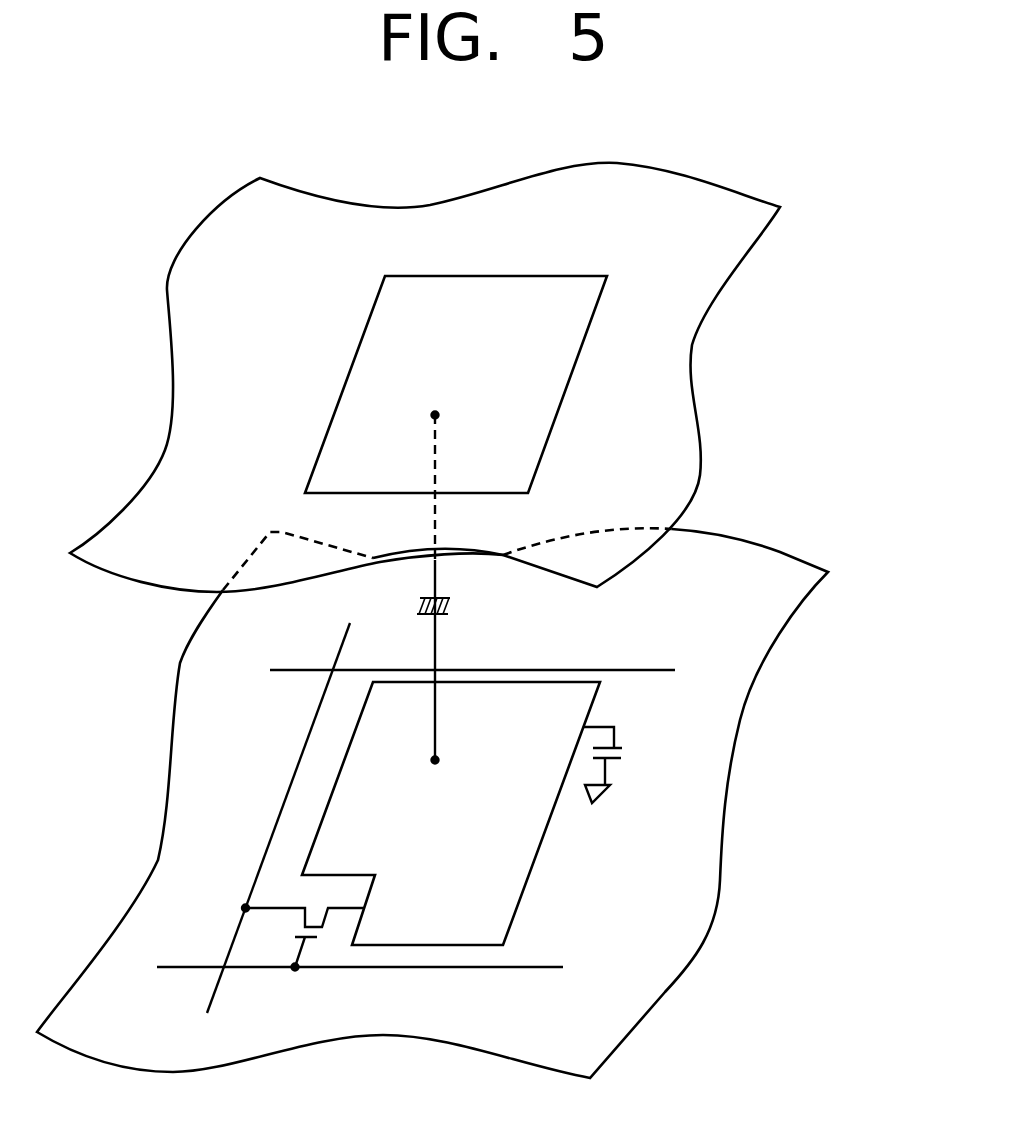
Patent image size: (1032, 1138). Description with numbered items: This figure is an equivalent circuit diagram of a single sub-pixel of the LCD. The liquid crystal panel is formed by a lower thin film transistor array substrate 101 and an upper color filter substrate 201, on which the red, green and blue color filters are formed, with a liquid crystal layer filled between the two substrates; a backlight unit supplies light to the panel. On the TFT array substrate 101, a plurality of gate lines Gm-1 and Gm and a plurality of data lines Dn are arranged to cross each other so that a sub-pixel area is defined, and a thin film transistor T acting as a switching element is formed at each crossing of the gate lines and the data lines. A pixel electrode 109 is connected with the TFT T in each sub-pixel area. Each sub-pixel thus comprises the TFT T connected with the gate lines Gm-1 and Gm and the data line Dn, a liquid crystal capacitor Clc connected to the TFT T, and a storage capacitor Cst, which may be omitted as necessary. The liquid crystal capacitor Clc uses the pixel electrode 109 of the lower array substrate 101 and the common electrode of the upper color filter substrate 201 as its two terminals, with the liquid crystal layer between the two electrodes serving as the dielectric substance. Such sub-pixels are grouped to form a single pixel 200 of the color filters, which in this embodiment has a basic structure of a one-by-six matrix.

The pixel 200 is at (557, 394).
The color filter substrate 201 is at (713, 438).
The TFT array substrate 101 is at (793, 625).
The pixel electrode 109 is at (514, 891).
The data line Dn is at (278, 816).
The gate line Gm-1 is at (464, 690).
The gate line Gm is at (360, 944).
The TFT T is at (303, 938).
The liquid crystal capacitor Clc is at (455, 588).
The storage capacitor Cst is at (624, 765).